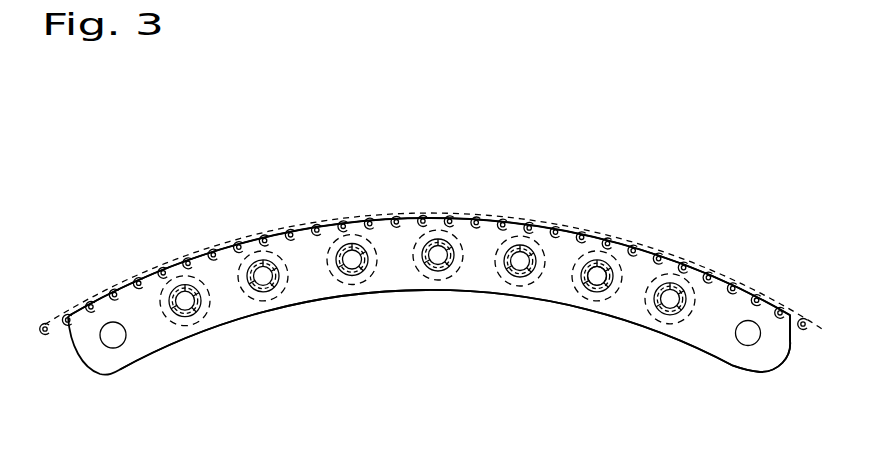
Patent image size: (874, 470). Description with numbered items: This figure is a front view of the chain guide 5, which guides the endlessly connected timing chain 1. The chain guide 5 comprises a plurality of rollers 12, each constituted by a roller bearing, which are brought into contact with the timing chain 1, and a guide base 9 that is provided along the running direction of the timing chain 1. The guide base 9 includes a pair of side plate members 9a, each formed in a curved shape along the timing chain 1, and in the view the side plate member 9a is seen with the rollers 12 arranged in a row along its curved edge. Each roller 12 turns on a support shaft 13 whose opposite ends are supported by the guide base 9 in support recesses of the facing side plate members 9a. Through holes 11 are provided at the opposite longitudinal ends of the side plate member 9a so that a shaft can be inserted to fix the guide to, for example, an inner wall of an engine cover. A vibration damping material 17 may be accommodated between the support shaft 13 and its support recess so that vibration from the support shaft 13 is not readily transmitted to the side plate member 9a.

The timing chain 1 is at (544, 226).
The chain guide 5 is at (476, 322).
The guide base 9 is at (266, 333).
The side plate member 9a is at (398, 283).
The through hole 11 is at (114, 340).
The roller 12 is at (614, 319).
The support shaft 13 is at (610, 268).
The vibration damping material 17 is at (598, 272).